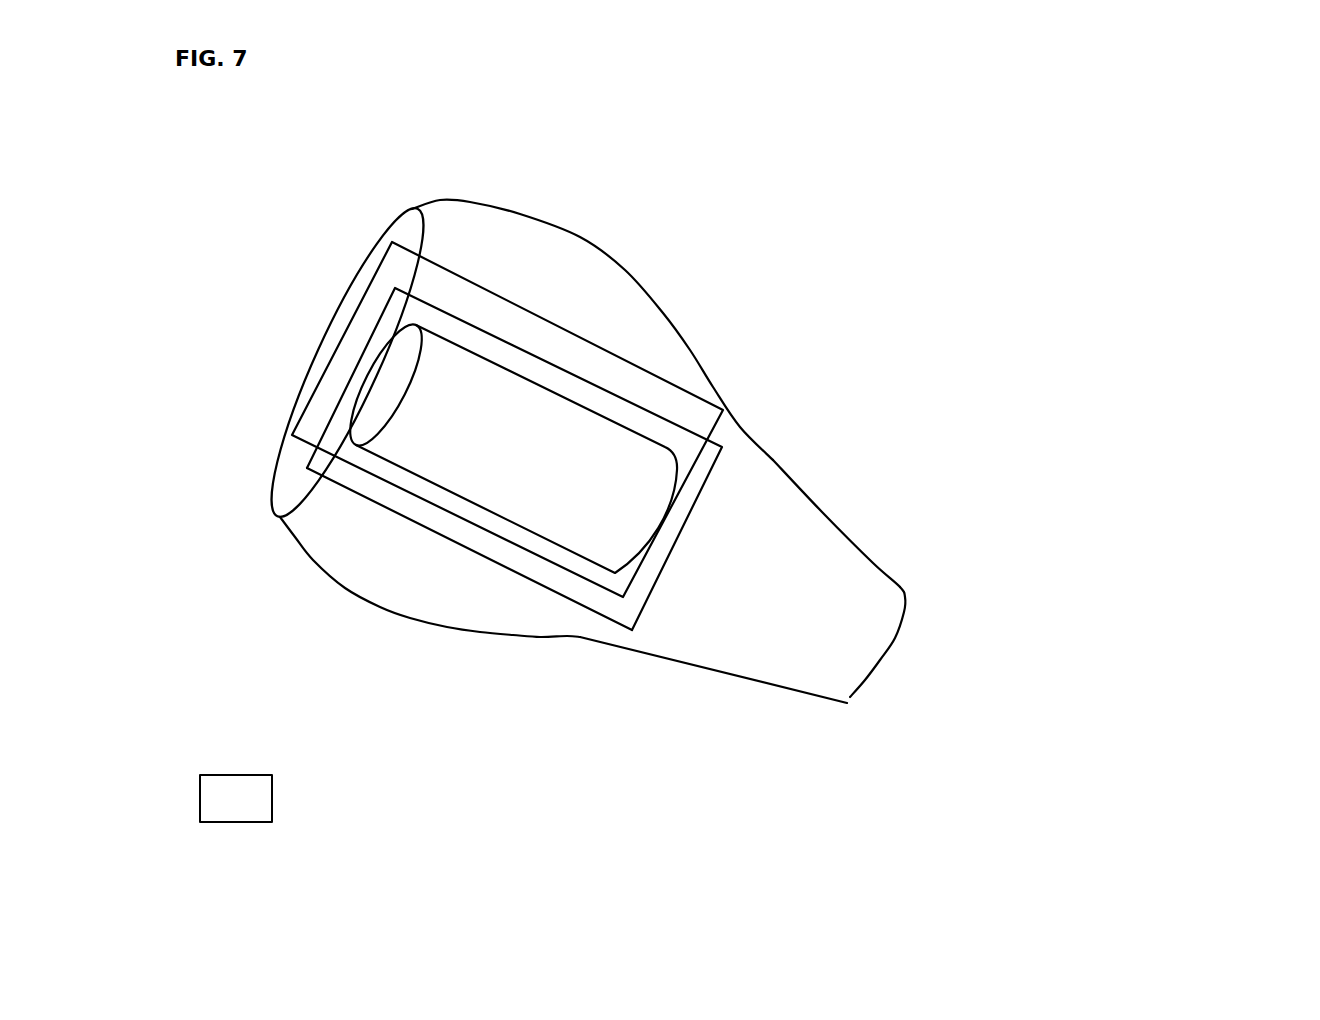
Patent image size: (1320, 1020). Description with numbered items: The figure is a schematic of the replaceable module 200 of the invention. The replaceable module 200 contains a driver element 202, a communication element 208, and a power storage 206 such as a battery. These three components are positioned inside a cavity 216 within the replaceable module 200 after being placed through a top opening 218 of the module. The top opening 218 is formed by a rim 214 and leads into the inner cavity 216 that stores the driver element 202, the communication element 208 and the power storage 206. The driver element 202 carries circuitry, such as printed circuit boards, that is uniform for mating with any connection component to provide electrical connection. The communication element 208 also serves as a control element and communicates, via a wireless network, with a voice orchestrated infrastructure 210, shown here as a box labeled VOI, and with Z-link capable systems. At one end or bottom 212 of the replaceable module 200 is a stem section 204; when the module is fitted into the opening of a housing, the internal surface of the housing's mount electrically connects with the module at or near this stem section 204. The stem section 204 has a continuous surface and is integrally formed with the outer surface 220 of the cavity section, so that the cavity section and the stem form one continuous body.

The replaceable module 200 is at (686, 282).
The driver element 202 is at (394, 252).
The stem section 204 is at (796, 622).
The power storage 206 is at (509, 477).
The communication element 208 is at (323, 476).
The voice orchestrated infrastructure 210 is at (300, 725).
The bottom 212 is at (926, 606).
The rim 214 is at (261, 428).
The cavity 216 is at (381, 314).
The top opening 218 is at (302, 349).
The outer surface 220 is at (676, 359).